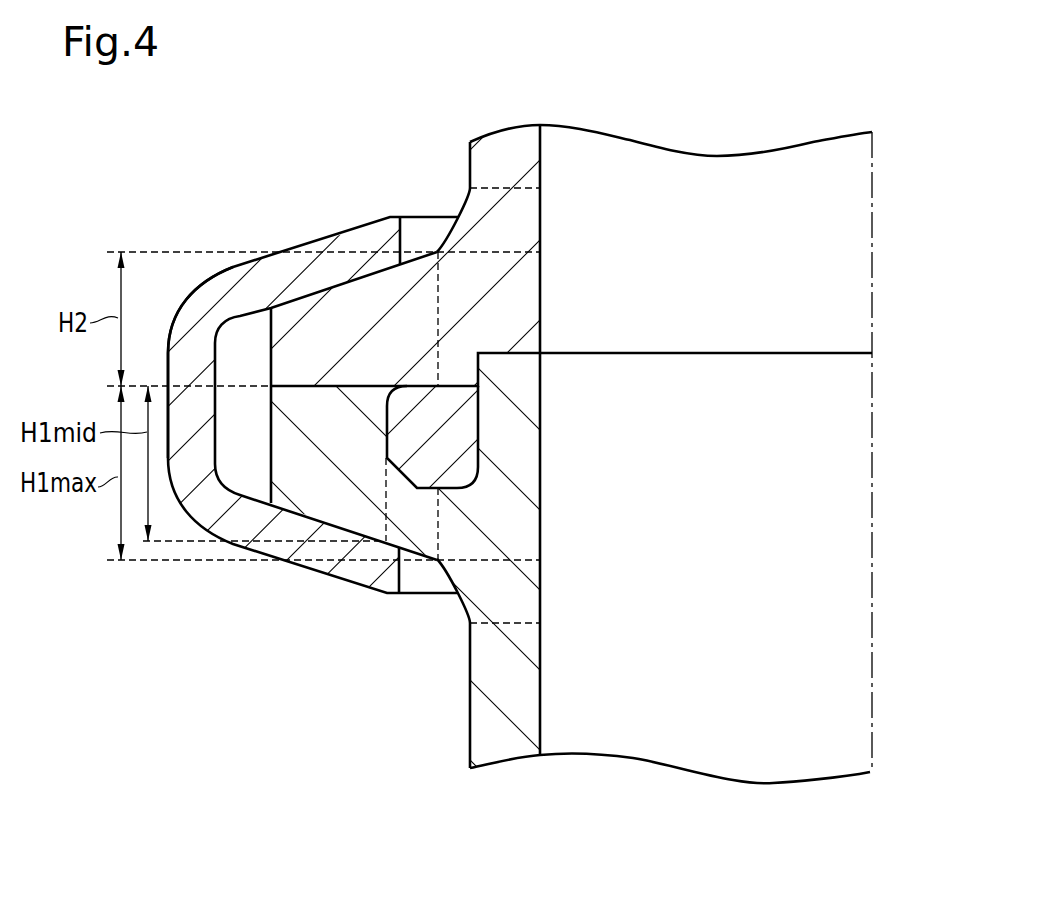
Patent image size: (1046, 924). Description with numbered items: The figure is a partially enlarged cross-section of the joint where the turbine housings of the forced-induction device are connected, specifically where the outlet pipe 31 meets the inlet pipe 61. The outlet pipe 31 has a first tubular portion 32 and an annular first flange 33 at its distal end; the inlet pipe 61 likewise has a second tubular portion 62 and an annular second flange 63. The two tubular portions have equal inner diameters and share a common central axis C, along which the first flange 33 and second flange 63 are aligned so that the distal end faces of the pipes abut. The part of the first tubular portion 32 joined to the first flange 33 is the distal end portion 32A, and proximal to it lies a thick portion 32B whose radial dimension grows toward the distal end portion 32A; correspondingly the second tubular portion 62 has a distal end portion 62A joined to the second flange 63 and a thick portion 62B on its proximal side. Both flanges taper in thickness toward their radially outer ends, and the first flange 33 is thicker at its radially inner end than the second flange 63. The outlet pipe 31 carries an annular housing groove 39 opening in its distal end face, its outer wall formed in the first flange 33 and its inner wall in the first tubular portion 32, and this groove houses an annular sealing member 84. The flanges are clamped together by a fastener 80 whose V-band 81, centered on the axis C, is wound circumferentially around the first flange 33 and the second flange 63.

The fastener 80 is at (406, 210).
The V-band 81 is at (200, 290).
The first flange 33 is at (338, 505).
The second flange 63 is at (355, 315).
The second tubular portion 62 is at (525, 150).
The distal end portion of the second tubular portion 62A is at (520, 297).
The thick portion of the second tubular portion 62B is at (520, 215).
The inlet pipe 61 is at (718, 172).
The first tubular portion 32 is at (523, 700).
The distal end portion of the first tubular portion 32A is at (505, 490).
The thick portion of the first tubular portion 32B is at (515, 598).
The housing groove 39 is at (463, 427).
The sealing member 84 is at (448, 407).
The outlet pipe 31 is at (710, 760).
The axis C is at (873, 168).